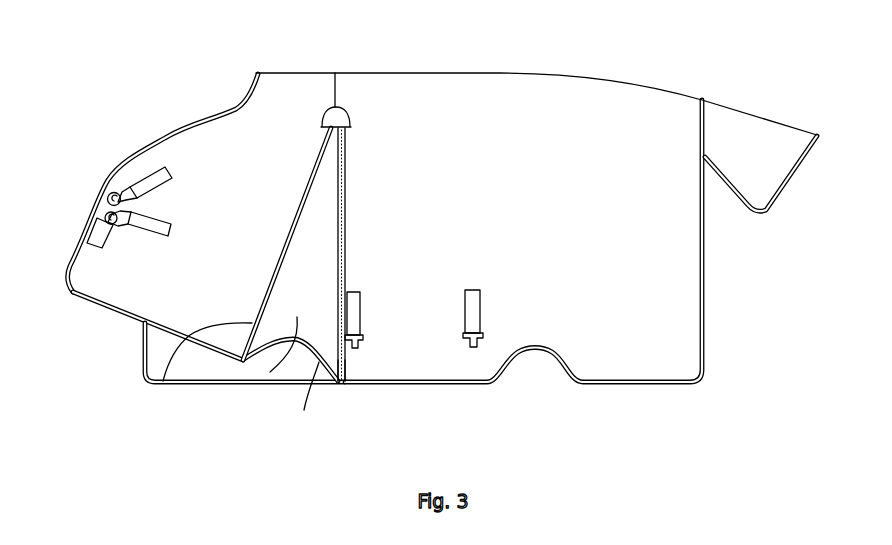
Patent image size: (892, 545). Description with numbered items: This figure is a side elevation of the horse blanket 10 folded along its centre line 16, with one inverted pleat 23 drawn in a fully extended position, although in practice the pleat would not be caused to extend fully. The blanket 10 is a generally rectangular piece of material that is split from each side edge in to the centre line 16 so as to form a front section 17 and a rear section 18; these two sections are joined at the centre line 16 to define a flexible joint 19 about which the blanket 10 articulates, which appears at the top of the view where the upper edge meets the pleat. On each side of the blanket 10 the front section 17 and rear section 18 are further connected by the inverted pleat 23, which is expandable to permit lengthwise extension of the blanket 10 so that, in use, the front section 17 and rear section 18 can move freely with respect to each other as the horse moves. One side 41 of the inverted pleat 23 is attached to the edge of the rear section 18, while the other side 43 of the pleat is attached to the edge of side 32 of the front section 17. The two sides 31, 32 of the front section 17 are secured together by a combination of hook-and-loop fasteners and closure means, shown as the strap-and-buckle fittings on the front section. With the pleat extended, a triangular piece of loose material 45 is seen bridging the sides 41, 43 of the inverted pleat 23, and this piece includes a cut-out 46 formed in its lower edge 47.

The horse blanket 10 is at (164, 81).
The centre line 16 is at (529, 73).
The front section 17 is at (100, 278).
The rear section 18 is at (681, 337).
The flexible joint 19 is at (335, 73).
The inverted pleat 23 is at (323, 220).
The side of the front section 31 is at (162, 357).
The side of the front section 32 is at (135, 278).
The side of the inverted pleat 41 is at (345, 364).
The other side of the inverted pleat 43 is at (163, 381).
The triangular piece of loose material 45 is at (270, 372).
The cut-out 46 is at (307, 343).
The lower edge 47 is at (312, 417).